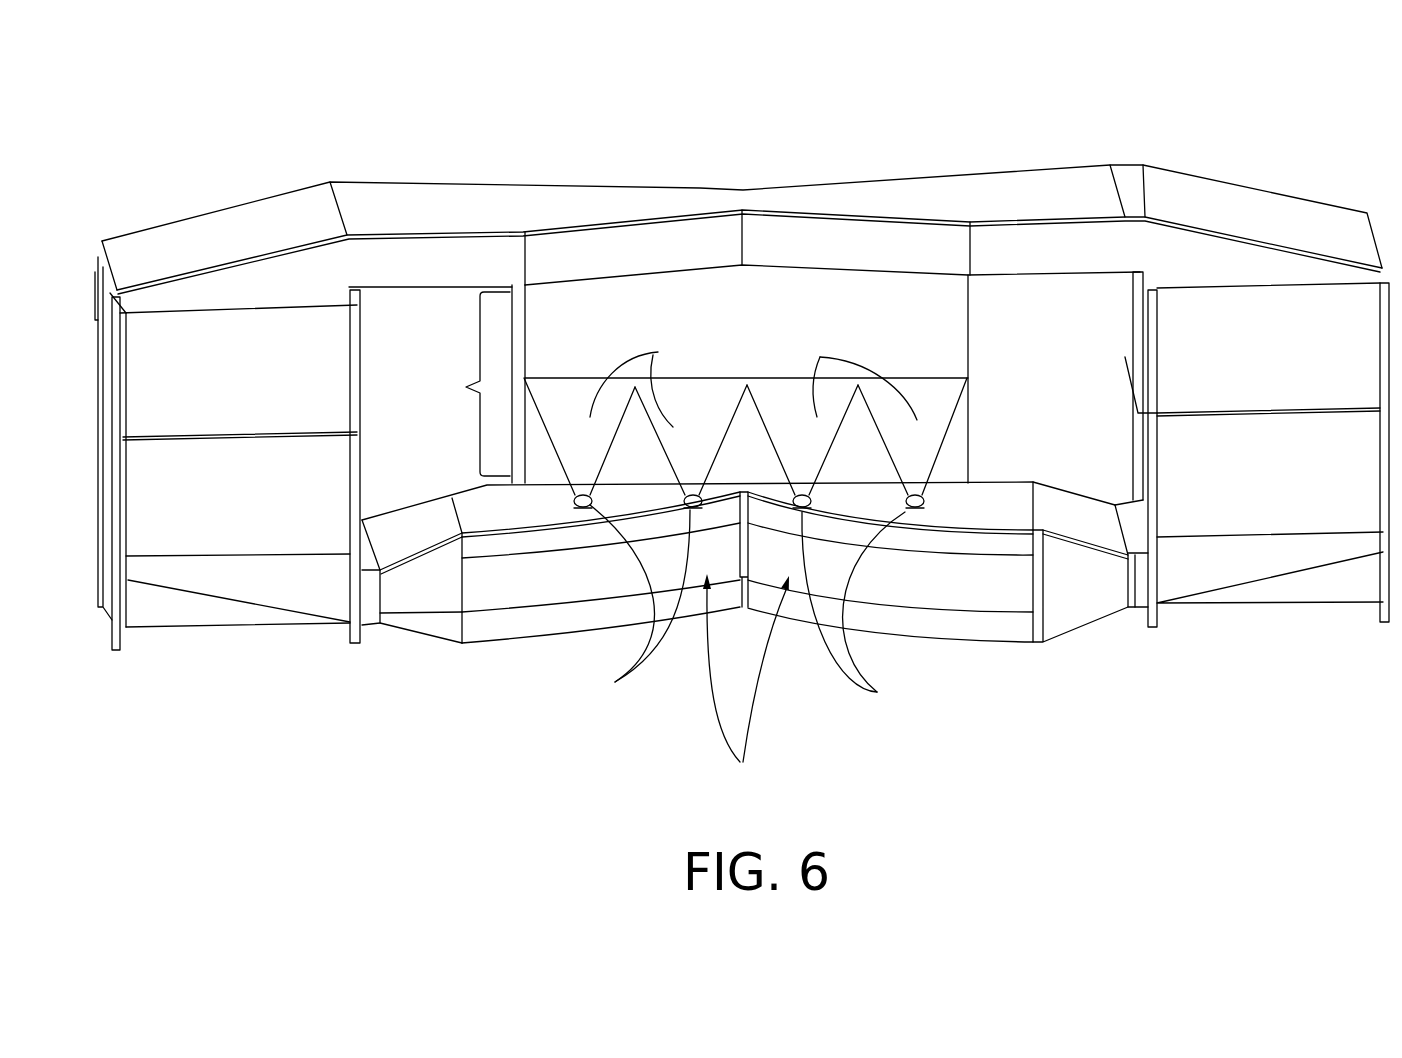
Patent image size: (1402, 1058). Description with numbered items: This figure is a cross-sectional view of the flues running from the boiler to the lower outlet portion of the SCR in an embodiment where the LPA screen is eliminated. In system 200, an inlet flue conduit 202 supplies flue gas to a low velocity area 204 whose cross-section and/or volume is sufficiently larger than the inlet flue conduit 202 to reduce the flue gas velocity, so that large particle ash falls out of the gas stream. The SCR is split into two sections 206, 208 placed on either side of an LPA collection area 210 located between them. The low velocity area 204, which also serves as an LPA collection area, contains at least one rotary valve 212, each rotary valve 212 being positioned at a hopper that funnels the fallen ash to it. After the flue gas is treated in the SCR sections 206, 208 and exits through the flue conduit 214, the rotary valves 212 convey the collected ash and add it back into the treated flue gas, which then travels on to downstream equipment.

The system 200 is at (340, 124).
The inlet flue conduit 202 is at (980, 197).
The low velocity area 204 is at (762, 266).
The SCR section 206 is at (258, 371).
The SCR section 208 is at (1296, 345).
The LPA collection area 210 is at (465, 387).
The rotary valve 212 is at (574, 504).
The flue conduit 214 is at (483, 625).